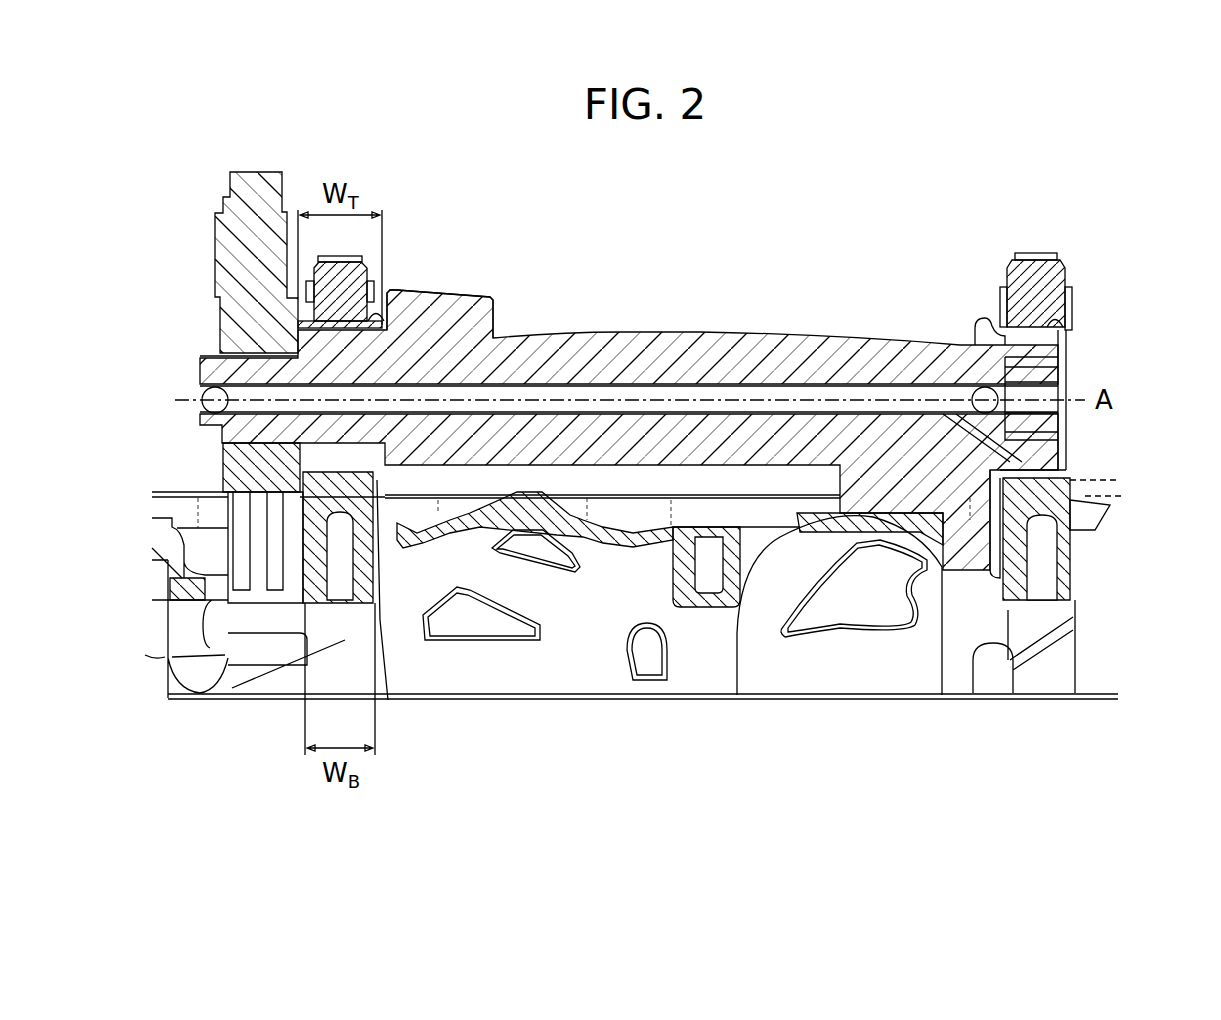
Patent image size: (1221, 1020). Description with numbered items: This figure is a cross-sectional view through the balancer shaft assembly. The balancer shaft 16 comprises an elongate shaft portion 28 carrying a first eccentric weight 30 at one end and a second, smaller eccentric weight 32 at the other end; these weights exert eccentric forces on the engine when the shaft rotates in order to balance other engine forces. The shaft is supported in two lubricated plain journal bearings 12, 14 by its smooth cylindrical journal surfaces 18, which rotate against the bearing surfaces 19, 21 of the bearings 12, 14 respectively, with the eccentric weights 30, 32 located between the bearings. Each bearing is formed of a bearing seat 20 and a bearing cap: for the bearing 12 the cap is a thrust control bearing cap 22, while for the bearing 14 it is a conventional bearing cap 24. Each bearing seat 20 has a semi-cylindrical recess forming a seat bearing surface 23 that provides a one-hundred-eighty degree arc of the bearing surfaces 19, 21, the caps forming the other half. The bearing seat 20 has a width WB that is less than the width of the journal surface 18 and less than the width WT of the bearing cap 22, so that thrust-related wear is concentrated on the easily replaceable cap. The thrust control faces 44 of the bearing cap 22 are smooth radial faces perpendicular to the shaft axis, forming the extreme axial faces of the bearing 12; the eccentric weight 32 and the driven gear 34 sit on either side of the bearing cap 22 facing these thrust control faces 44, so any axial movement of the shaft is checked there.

The bearing 12 is at (397, 535).
The bearing 14 is at (1050, 490).
The balancer shaft 16 is at (705, 358).
The journal surfaces 18 is at (380, 317).
The bearing surface 19 is at (298, 340).
The bearing seat 20 is at (322, 500).
The bearing surface 21 is at (965, 325).
The thrust control bearing cap 22 is at (330, 278).
The seat bearing surface 23 is at (318, 473).
The bearing cap 24 is at (1010, 262).
The elongate shaft portion 28 is at (647, 450).
The first eccentric weight 30 is at (928, 498).
The second eccentric weight 32 is at (437, 313).
The driven gear 34 is at (257, 225).
The thrust control faces 44 is at (298, 318).